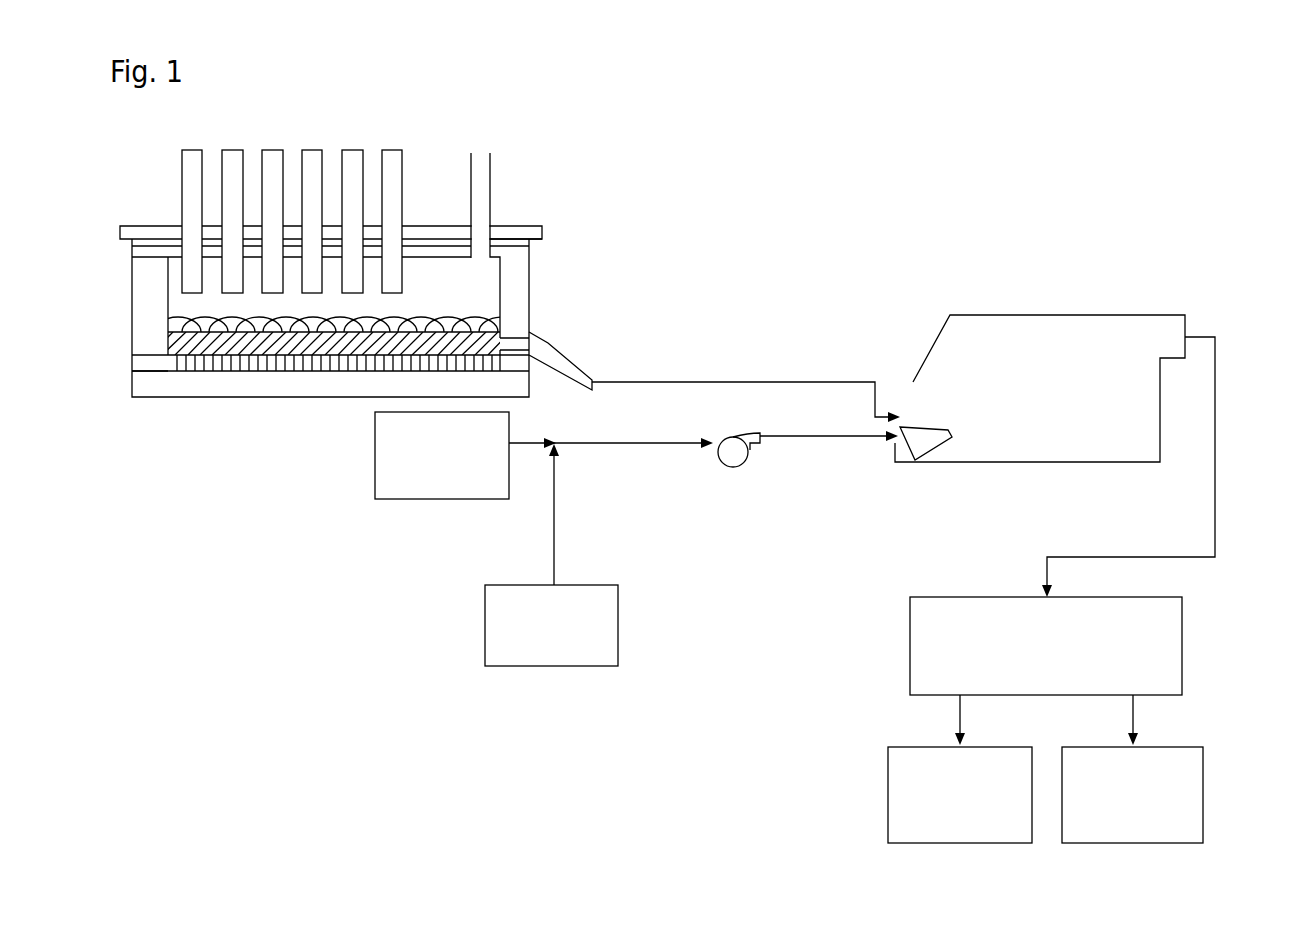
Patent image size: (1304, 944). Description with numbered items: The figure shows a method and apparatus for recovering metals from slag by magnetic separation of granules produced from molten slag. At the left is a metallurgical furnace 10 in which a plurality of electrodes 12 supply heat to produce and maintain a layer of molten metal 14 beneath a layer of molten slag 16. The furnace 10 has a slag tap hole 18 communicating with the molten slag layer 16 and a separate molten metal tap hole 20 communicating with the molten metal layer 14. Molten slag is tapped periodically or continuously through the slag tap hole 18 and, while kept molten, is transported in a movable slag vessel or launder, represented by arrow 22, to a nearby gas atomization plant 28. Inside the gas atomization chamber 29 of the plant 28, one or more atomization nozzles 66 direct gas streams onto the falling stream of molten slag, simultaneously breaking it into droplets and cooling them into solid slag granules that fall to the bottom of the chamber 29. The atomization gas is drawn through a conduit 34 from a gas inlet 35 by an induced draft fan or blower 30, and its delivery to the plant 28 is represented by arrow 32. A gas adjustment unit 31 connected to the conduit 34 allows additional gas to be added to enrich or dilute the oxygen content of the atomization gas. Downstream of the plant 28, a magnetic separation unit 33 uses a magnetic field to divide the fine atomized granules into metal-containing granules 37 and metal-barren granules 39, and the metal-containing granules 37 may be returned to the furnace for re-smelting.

The metallurgical furnace 10 is at (568, 268).
The electrodes 12 is at (390, 150).
The layer of molten metal 14 is at (190, 365).
The layer of molten slag 16 is at (332, 343).
The slag tap hole 18 is at (515, 335).
The molten metal tap hole 20 is at (150, 365).
The movable slag vessel or launder 22 is at (713, 382).
The gas atomization plant 28 is at (1087, 300).
The gas atomization chamber 29 is at (998, 348).
The induced draft fan 30 is at (735, 467).
The gas adjustment unit 31 is at (403, 488).
The arrow representing supply of atomizing gas 32 is at (818, 437).
The magnetic separation unit 33 is at (1172, 647).
The conduit 34 is at (667, 443).
The gas inlet 35 is at (572, 653).
The metal-containing granules 37 is at (898, 767).
The metal-barren granules 39 is at (1197, 778).
The atomization nozzles 66 is at (932, 440).